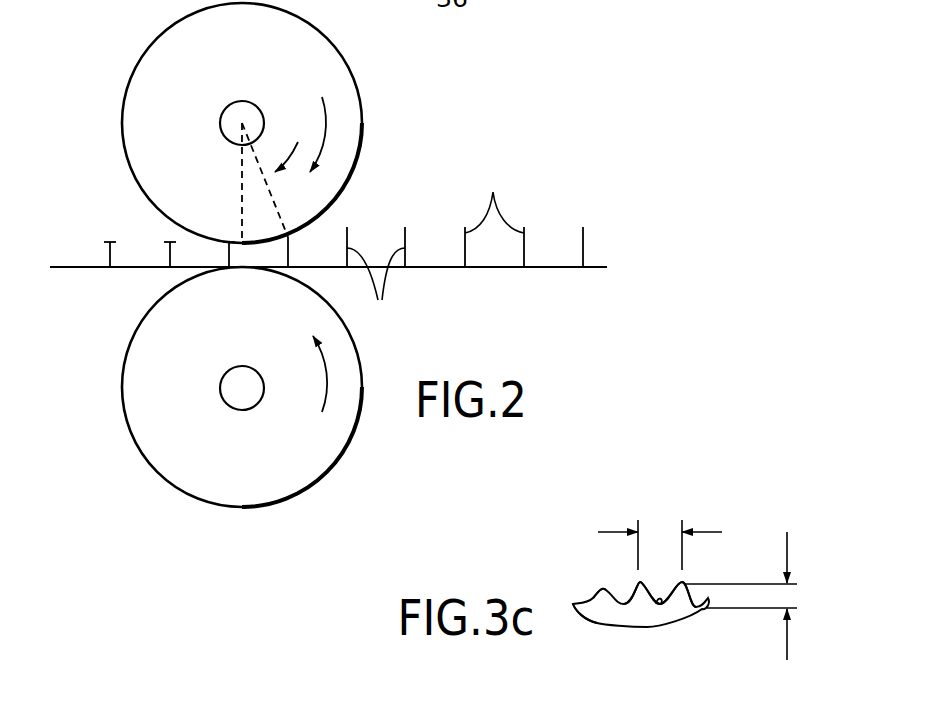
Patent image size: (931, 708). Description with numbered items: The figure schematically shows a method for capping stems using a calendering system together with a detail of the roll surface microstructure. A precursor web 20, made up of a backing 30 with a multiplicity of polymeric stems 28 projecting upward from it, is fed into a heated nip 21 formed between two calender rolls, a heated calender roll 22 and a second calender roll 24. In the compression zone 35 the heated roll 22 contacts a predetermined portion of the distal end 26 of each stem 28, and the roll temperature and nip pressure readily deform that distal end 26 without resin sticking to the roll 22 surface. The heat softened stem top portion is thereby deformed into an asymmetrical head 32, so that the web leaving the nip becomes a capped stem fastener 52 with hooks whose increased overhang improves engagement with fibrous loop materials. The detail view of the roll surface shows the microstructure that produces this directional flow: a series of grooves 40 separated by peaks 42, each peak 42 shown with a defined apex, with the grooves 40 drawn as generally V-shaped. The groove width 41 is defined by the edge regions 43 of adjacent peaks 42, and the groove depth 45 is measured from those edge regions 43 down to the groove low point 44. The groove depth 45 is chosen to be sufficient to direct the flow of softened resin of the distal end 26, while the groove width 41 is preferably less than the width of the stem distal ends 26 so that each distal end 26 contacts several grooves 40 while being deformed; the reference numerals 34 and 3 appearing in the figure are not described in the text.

In FIG. 2, the precursor web 20 is at (498, 270).
In FIG. 2, the nip 21 is at (347, 209).
In FIG. 2, the heated calender roll 22 is at (138, 62).
In FIG. 2, the calender roll 24 is at (137, 328).
In FIG. 2, the distal end 26 is at (494, 214).
In FIG. 2, the stem 28 is at (376, 279).
In FIG. 2, the backing 30 is at (597, 262).
In FIG. 2, the asymmetrical head 32 is at (110, 242).
In FIG. 2, the fin being formed 34 is at (263, 240).
In FIG. 2, the compression zone 35 is at (236, 182).
In FIG. 2, the capped stem fastener 52 is at (77, 268).
In FIG. 3C, the strip 3 is at (598, 621).
In FIG. 3C, the groove 40 is at (620, 592).
In FIG. 3C, the groove width 41 is at (613, 532).
In FIG. 3C, the peak 42 is at (598, 595).
In FIG. 3C, the edge region 43 is at (641, 583).
In FIG. 3C, the groove low point 44 is at (668, 600).
In FIG. 3C, the groove depth 45 is at (787, 540).